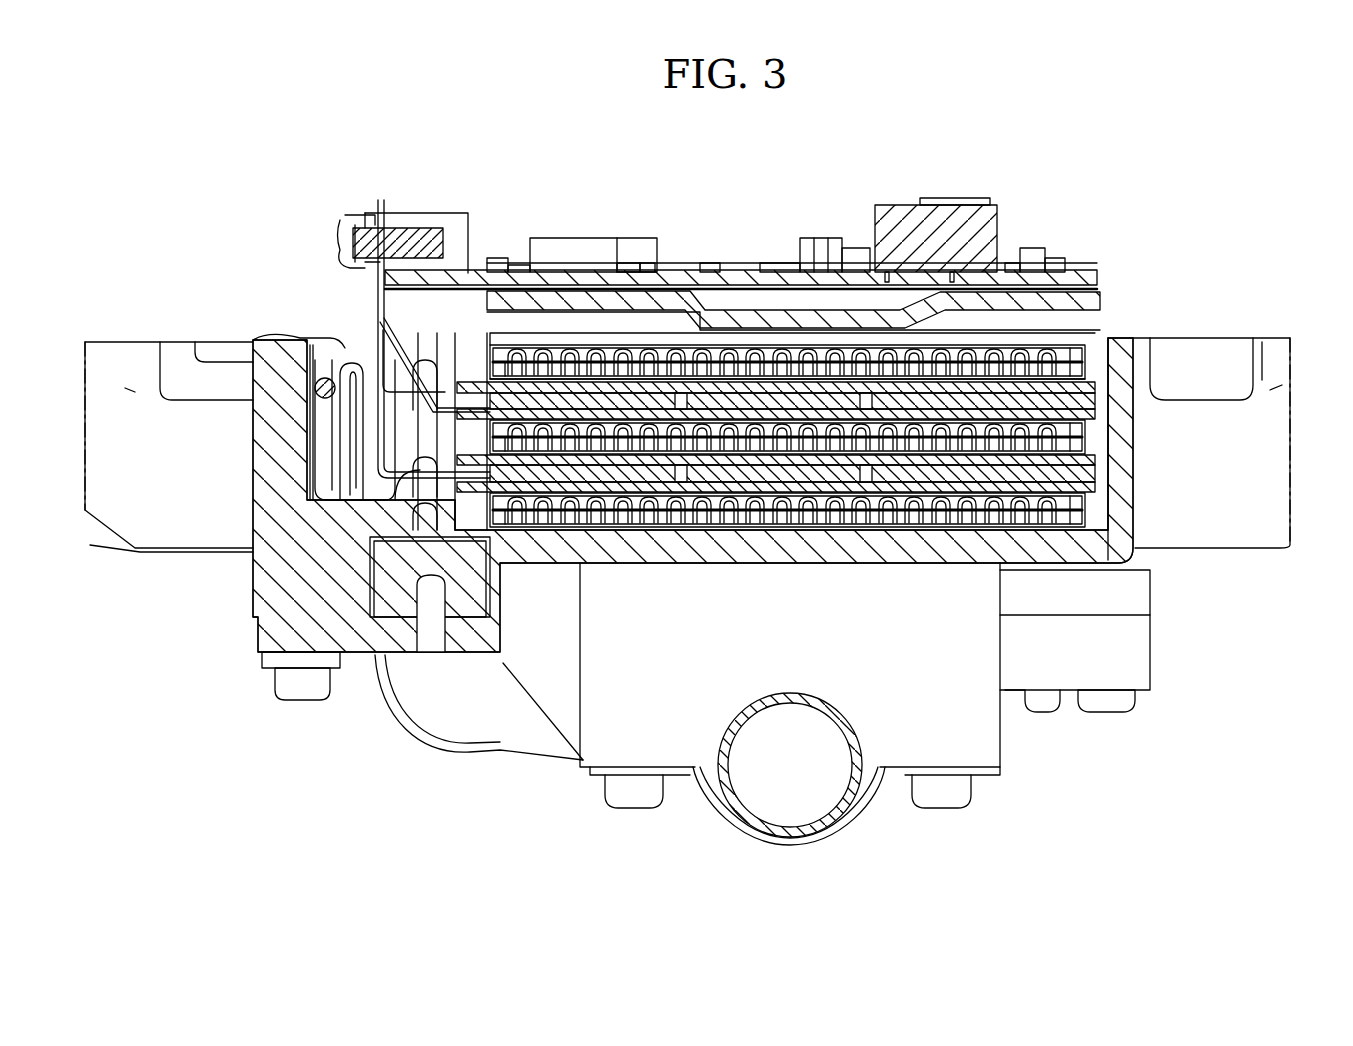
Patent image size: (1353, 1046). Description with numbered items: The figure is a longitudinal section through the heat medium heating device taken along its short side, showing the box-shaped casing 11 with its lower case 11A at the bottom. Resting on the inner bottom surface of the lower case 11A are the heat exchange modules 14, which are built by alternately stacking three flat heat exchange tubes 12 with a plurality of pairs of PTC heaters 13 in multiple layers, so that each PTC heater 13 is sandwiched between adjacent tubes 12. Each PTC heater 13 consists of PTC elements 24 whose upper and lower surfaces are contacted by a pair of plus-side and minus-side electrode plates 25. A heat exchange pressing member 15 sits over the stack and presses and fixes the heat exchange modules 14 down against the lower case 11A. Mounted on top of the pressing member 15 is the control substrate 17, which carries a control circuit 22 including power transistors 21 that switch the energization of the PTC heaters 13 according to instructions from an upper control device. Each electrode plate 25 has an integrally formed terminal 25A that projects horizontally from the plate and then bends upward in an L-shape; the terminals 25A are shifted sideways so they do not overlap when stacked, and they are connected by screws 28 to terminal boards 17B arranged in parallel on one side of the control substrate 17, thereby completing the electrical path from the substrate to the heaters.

The casing 11 is at (1150, 570).
The lower case 11A is at (940, 565).
The flat heat exchange tube 12 is at (1092, 358).
The PTC heater 13 is at (742, 385).
The heat exchange module 14 is at (1110, 395).
The heat exchange pressing member 15 is at (1012, 292).
The control substrate 17 is at (667, 282).
The terminal board 17B is at (440, 222).
The power transistor 21 is at (573, 252).
The control circuit 22 is at (778, 248).
The PTC element 24 is at (652, 510).
The electrode plate 25 is at (740, 472).
The terminal 25A is at (380, 312).
The screw 28 is at (365, 238).